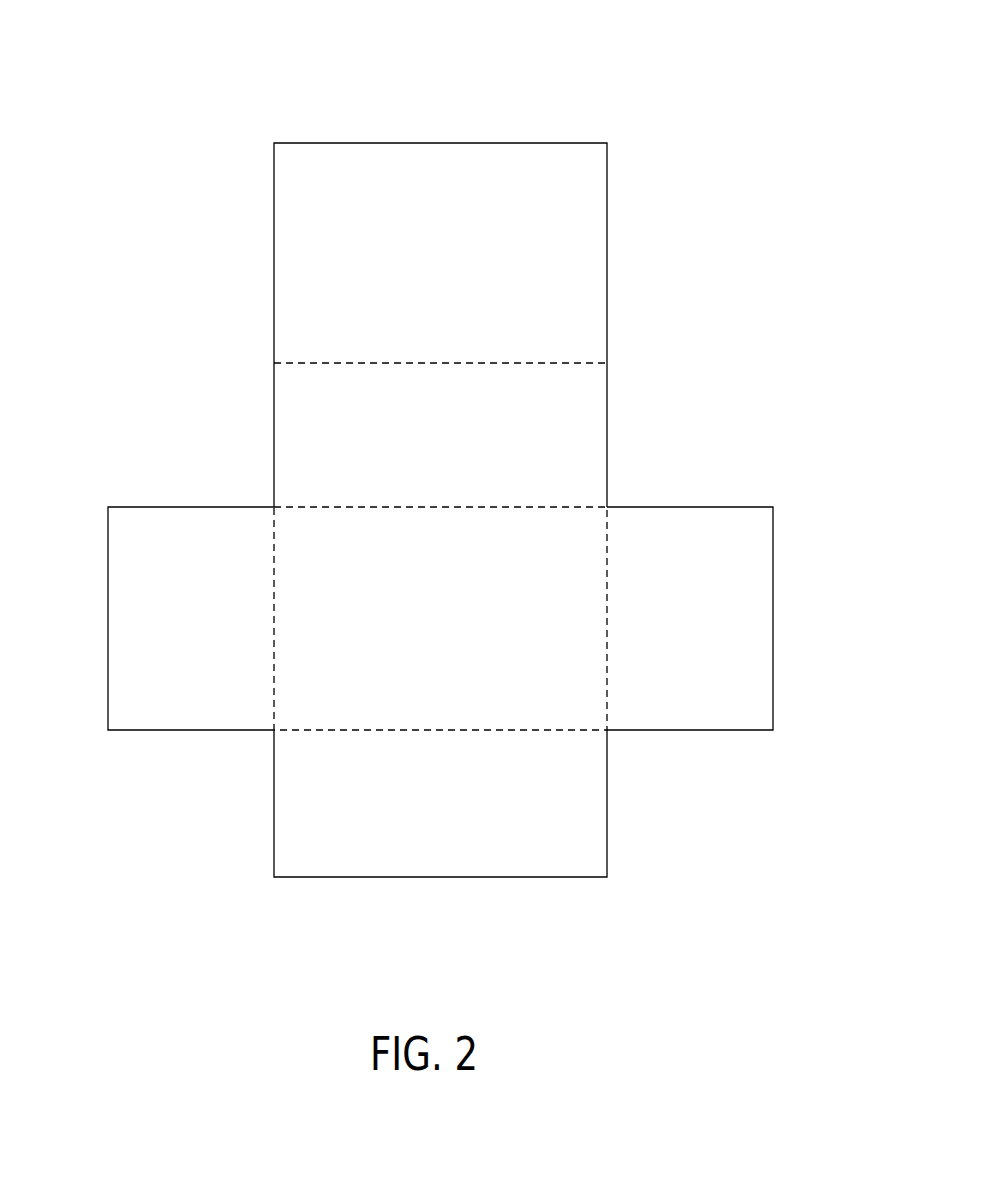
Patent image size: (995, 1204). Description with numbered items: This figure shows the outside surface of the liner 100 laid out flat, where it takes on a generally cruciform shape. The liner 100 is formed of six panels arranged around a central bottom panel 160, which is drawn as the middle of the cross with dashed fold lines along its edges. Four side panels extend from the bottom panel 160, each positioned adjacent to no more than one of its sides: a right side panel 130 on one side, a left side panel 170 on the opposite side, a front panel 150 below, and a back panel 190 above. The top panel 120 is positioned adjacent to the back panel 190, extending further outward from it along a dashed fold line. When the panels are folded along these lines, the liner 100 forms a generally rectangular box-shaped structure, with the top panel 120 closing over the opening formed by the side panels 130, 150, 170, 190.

The liner 100 is at (443, 475).
The top panel 120 is at (583, 260).
The back panel 190 is at (583, 445).
The bottom panel 160 is at (323, 685).
The right side panel 130 is at (108, 620).
The left side panel 170 is at (775, 618).
The front panel 150 is at (442, 877).